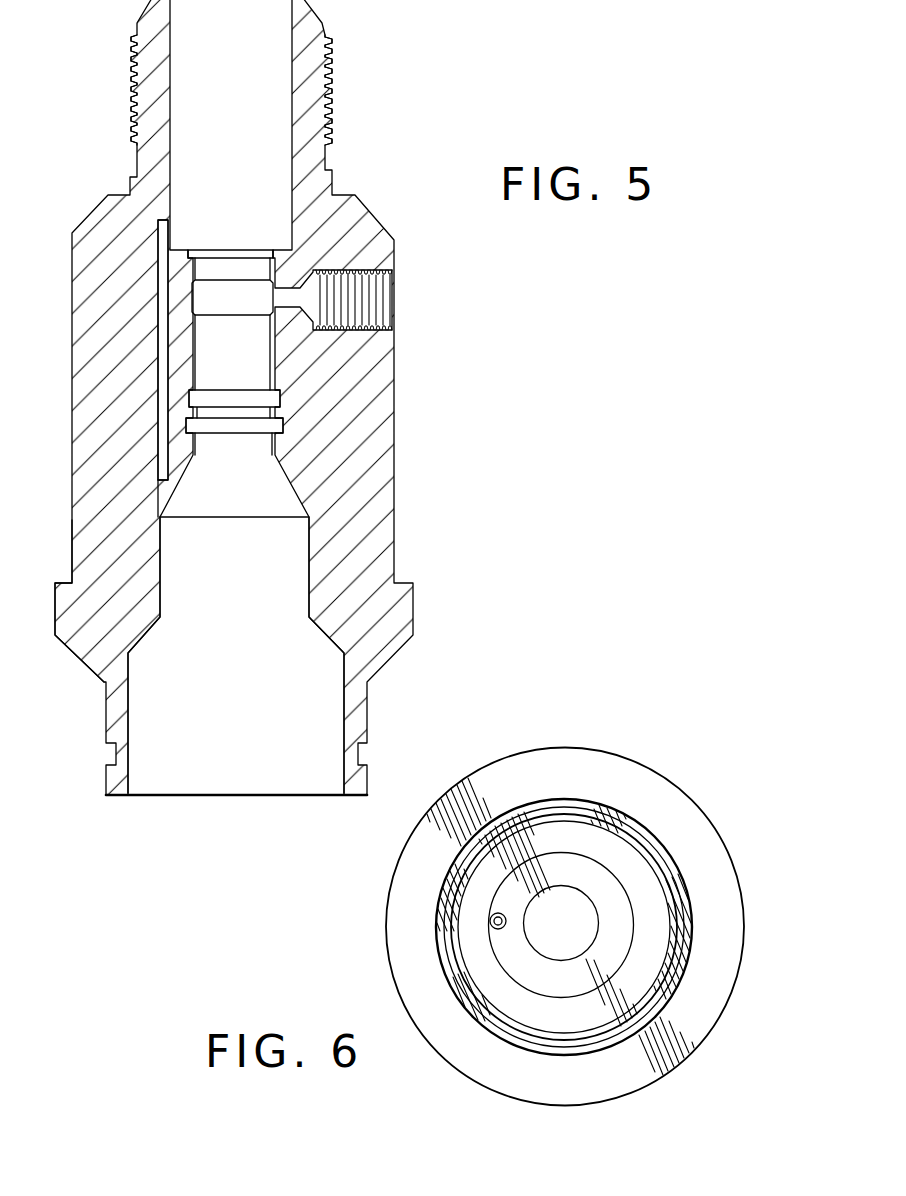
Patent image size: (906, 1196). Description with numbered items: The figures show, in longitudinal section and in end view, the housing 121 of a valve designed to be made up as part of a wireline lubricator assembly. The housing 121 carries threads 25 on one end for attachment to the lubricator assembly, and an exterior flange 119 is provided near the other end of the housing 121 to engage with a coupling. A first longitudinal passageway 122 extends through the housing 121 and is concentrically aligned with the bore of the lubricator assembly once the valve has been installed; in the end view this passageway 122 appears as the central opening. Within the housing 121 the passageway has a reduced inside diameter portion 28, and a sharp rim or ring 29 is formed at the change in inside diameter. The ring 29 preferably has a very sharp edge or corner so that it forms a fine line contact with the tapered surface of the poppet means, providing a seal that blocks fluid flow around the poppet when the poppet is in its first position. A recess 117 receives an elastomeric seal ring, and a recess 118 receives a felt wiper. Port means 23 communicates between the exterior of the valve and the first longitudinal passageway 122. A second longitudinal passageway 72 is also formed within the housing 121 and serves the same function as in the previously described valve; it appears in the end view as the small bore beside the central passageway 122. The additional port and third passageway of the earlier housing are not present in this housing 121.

In FIG. 5, the housing 121 is at (367, 185).
In FIG. 6, the housing 121 is at (661, 772).
In FIG. 5, the threads 25 is at (332, 83).
In FIG. 5, the rim or ring 29 is at (226, 253).
In FIG. 5, the second longitudinal passageway 72 is at (163, 283).
In FIG. 6, the second longitudinal passageway 72 is at (490, 921).
In FIG. 5, the recess 117 is at (195, 384).
In FIG. 5, the recess 118 is at (190, 425).
In FIG. 5, the exterior flange 119 is at (72, 583).
In FIG. 5, the port means 23 is at (392, 306).
In FIG. 5, the reduced inside diameter portion 28 is at (272, 374).
In FIG. 5, the first longitudinal passageway 122 is at (255, 604).
In FIG. 6, the first longitudinal passageway 122 is at (580, 938).